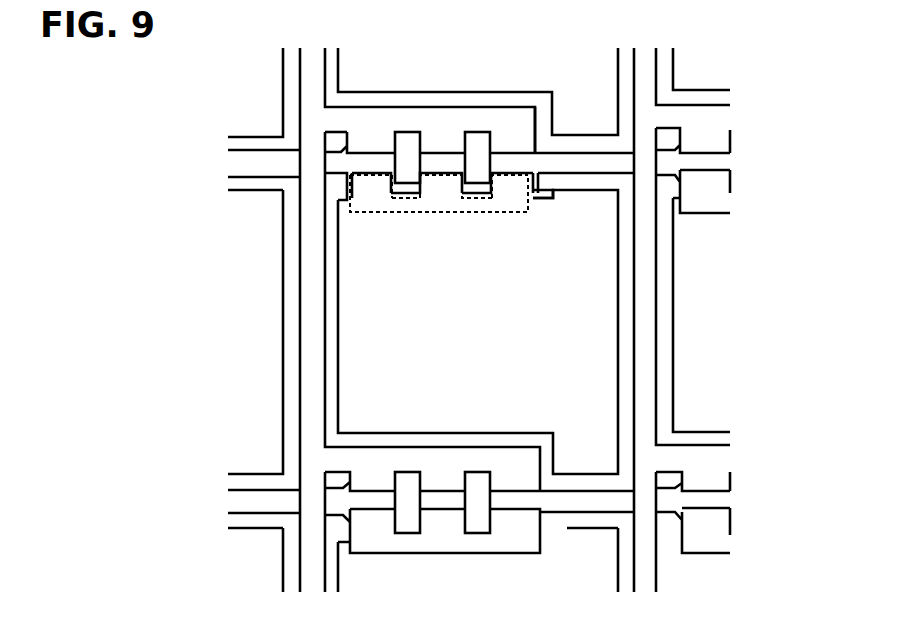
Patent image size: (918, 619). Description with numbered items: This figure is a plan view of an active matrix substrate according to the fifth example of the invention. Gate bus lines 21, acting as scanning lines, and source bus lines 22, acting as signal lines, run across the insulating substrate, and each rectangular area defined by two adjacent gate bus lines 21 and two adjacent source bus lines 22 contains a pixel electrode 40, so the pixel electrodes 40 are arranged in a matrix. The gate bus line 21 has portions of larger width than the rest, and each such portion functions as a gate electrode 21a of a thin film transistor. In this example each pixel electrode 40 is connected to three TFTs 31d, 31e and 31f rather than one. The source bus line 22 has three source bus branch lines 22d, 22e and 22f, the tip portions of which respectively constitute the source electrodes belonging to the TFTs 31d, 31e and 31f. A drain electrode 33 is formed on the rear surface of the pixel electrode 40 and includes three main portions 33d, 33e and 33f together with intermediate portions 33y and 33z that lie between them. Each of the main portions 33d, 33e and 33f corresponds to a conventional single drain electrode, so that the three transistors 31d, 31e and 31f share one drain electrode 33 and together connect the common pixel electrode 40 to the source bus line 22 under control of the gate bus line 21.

The gate bus line 21 is at (610, 160).
The gate electrode 21a is at (535, 163).
The source bus line 22 is at (305, 73).
The source bus branch line 22d is at (357, 128).
The source bus branch line 22e is at (427, 128).
The source bus branch line 22f is at (500, 130).
The TFT 31d is at (363, 163).
The TFT 31e is at (440, 171).
The TFT 31f is at (495, 171).
The drain electrode 33 is at (540, 193).
The main portion 33d is at (362, 214).
The main portion 33e is at (453, 196).
The main portion 33f is at (535, 182).
The intermediate portion 33y is at (410, 214).
The intermediate portion 33z is at (483, 199).
The pixel electrode 40 is at (549, 375).